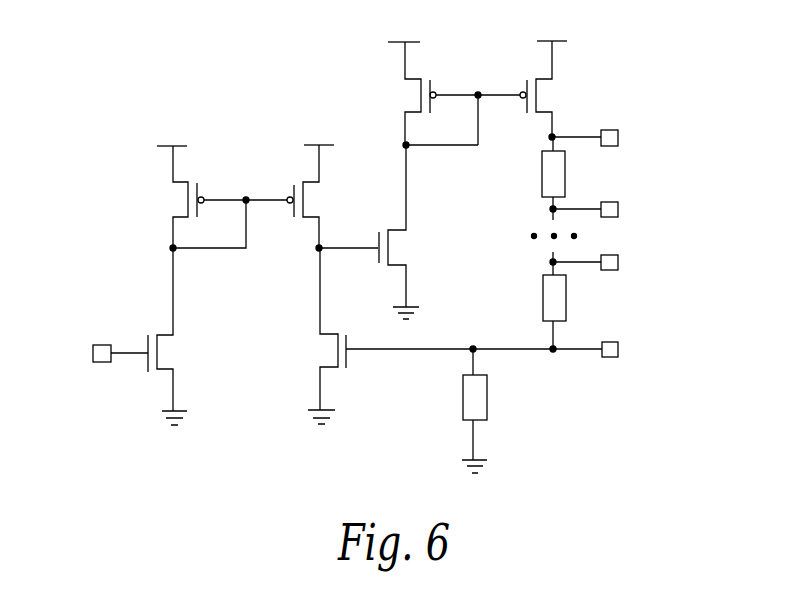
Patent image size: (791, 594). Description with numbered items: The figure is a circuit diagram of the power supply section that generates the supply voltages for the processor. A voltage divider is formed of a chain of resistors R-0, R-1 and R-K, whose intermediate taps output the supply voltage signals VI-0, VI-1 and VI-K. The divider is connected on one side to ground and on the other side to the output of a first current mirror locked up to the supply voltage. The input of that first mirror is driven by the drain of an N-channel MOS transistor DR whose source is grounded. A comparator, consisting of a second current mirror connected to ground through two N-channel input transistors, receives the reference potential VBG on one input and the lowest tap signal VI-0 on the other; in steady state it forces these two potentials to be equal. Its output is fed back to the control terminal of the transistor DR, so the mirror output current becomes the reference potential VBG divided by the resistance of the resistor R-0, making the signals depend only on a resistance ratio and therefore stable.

The reference potential VBG is at (100, 356).
The transistor DR is at (406, 232).
The resistor R-K is at (531, 178).
The resistor R-1 is at (534, 312).
The resistor R-0 is at (453, 404).
The supply voltage signal VI-K is at (615, 132).
The supply voltage signal VI-1 is at (612, 260).
The supply voltage signal VI-0 is at (508, 350).